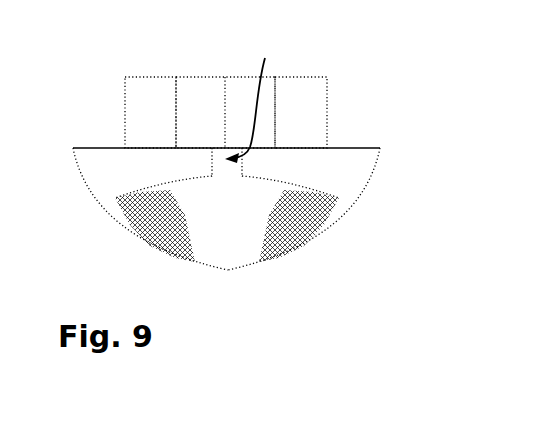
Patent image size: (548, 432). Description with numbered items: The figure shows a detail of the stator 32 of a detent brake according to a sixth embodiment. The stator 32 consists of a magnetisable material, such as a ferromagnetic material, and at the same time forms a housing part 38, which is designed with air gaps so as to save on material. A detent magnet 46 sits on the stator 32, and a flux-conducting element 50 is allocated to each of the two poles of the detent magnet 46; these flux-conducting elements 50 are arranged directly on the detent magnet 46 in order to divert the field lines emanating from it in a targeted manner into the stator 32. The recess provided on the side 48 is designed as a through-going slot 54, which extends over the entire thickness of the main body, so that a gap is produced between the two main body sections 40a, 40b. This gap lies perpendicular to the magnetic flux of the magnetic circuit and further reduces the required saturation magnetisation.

The stator 32 is at (83, 158).
The housing part 38 is at (325, 158).
The main body section 40a is at (104, 170).
The main body section 40b is at (347, 187).
The detent magnet 46 is at (238, 96).
The side 48 is at (90, 140).
The flux-conducting element 50 is at (152, 113).
The through-going slot 54 is at (258, 98).